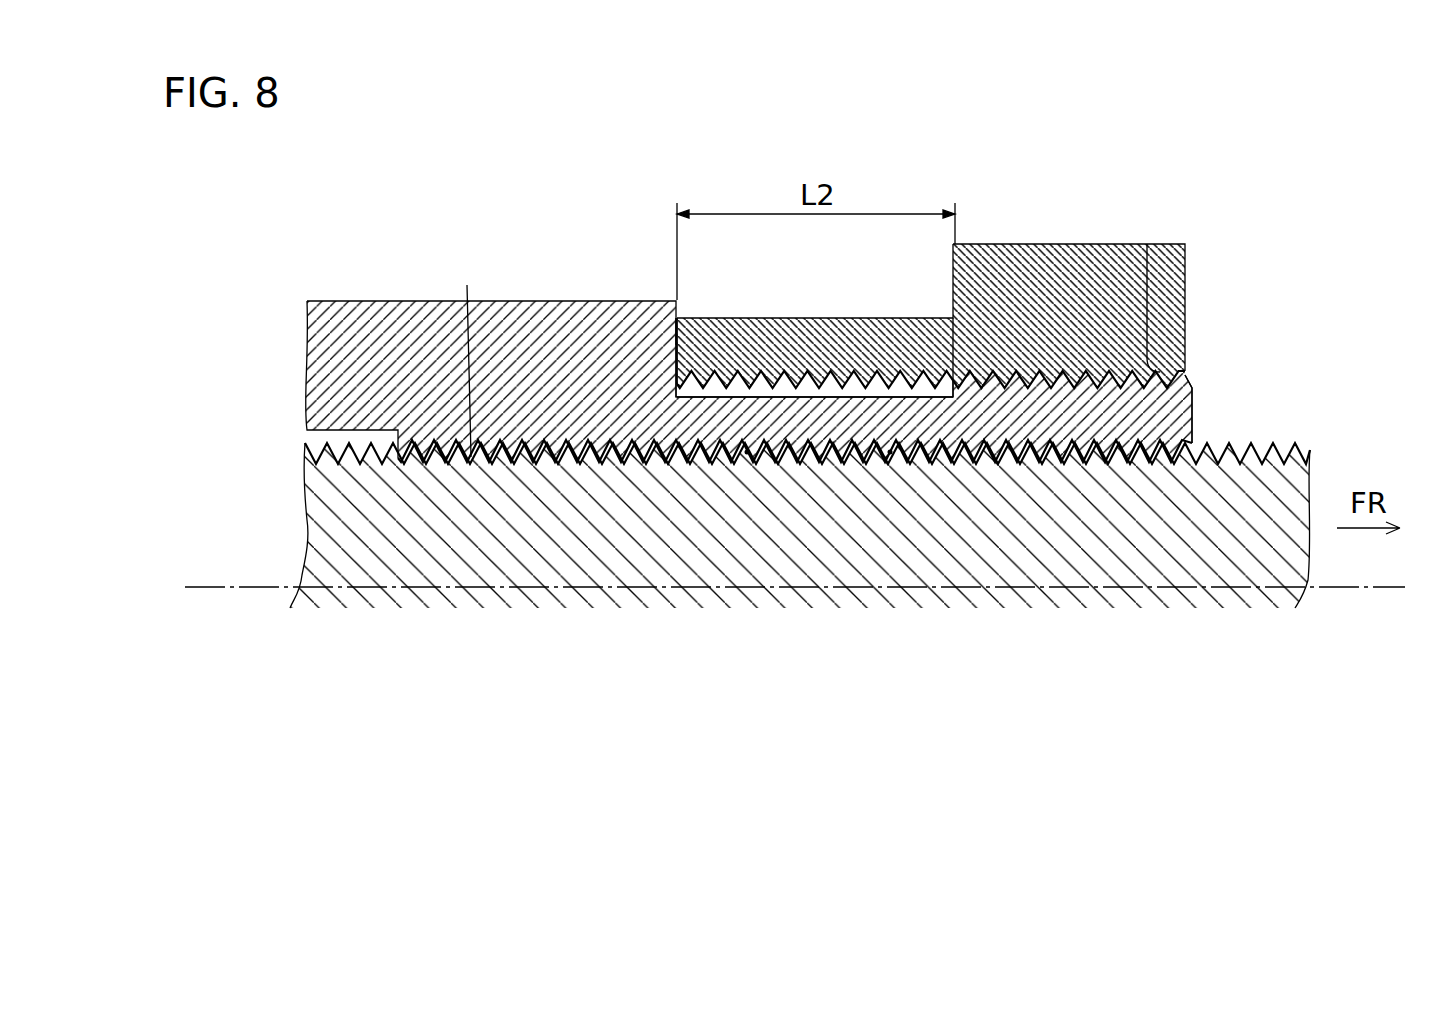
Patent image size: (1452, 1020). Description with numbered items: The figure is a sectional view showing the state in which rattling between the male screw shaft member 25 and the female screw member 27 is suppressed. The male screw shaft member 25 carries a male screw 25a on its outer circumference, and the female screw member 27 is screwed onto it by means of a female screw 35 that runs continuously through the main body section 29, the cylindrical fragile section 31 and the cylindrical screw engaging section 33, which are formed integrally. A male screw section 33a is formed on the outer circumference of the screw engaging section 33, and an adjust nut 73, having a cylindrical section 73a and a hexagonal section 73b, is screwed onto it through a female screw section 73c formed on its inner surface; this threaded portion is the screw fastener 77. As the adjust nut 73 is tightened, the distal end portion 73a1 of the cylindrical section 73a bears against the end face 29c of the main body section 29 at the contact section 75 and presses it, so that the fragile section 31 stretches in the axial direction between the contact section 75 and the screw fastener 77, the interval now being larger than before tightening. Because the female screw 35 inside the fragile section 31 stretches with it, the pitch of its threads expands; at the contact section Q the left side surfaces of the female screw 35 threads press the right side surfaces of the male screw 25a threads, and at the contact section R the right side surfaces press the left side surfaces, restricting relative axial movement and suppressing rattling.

The male screw shaft member 25 is at (826, 490).
The male screw 25a is at (1275, 455).
The female screw member 27 is at (794, 328).
The main body section 29 is at (403, 311).
The end face 29c is at (696, 343).
The fragile section 31 is at (767, 403).
The screw engaging section 33 is at (1183, 405).
The male screw section 33a is at (1147, 244).
The female screw 35 is at (480, 355).
The adjust nut 73 is at (909, 275).
The cylindrical section 73a is at (817, 330).
The distal end portion 73a1 is at (674, 321).
The hexagonal section 73b is at (1103, 250).
The female screw section 73c is at (888, 380).
The contact section 75 is at (677, 345).
The screw fastener 77 is at (952, 375).
The contact section Q is at (747, 452).
The contact section R is at (890, 452).